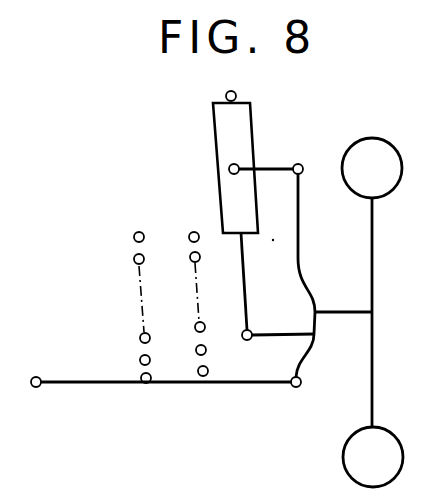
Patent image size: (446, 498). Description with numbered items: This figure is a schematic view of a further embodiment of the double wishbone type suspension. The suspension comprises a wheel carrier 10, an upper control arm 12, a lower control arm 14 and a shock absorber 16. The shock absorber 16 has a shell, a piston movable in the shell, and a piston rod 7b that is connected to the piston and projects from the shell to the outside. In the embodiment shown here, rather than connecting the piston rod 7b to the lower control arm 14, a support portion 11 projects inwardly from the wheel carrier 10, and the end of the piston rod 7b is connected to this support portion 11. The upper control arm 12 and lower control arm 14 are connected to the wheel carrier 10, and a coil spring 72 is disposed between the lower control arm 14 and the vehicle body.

The shock absorber 16 is at (247, 110).
The upper control arm 12 is at (276, 166).
The wheel carrier 10 is at (310, 284).
The piston rod 7b is at (244, 287).
The support portion 11 is at (280, 332).
The lower control arm 14 is at (128, 385).
The coil spring 72 is at (133, 237).